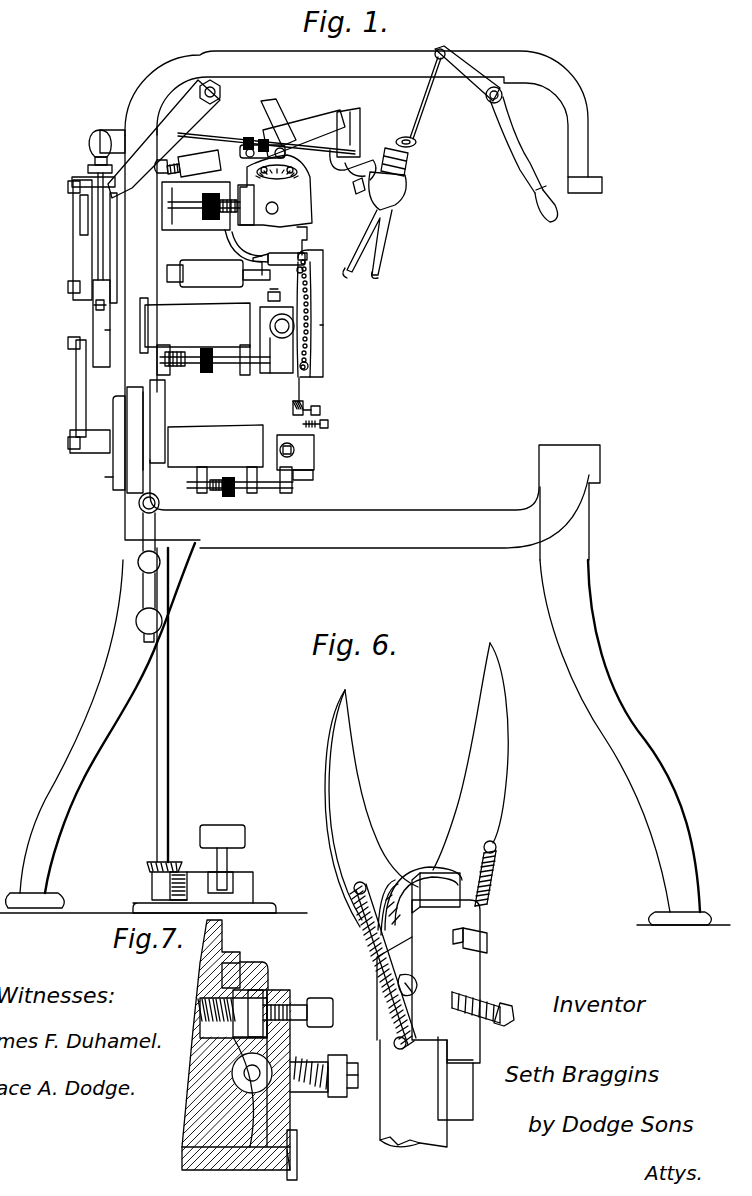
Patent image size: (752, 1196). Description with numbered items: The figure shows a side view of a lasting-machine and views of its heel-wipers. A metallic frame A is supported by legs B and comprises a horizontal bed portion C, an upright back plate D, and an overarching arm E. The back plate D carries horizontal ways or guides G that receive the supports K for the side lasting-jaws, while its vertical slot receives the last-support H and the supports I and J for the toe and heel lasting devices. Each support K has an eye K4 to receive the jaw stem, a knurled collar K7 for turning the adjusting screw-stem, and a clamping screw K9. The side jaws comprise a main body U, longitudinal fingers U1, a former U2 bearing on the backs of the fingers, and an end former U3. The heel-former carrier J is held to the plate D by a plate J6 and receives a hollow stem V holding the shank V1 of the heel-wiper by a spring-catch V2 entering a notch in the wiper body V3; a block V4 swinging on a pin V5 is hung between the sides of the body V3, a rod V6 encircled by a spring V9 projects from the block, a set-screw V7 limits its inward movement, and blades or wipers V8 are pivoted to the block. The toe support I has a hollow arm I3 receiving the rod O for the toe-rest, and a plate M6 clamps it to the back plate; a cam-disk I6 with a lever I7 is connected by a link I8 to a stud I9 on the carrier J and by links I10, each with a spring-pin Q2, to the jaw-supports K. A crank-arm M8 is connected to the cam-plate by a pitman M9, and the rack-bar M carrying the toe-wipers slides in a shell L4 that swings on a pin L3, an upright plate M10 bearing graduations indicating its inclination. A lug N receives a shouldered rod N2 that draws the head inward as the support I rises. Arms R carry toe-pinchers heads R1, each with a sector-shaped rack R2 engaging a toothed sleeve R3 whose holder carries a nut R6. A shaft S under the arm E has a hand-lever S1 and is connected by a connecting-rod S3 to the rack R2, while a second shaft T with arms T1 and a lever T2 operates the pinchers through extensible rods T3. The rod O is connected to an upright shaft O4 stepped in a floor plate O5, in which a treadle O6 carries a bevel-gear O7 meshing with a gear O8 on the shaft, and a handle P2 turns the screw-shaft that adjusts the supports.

In FIG. 1, the metallic frame A is at (95, 527).
In FIG. 1, the legs B is at (365, 734).
In FIG. 1, the horizontal bed portion C is at (375, 502).
In FIG. 1, the overarching arm E is at (363, 122).
In FIG. 1, the upright back plate D is at (128, 440).
In FIG. 1, the horizontal ways or guides G is at (146, 404).
In FIG. 1, the last-support H is at (208, 362).
In FIG. 1, the support or carrier for the toe-lasting mechanism I is at (196, 206).
In FIG. 1, the second hollow arm I3 is at (208, 283).
In FIG. 1, the plate or disk (cam-disk) I6 is at (105, 318).
In FIG. 1, the handle or lever I7 is at (95, 142).
In FIG. 1, the link I8 is at (192, 152).
In FIG. 1, the stud I9 is at (72, 450).
In FIG. 1, the links I10 is at (106, 330).
In FIG. 1, the heel-former carrier (support) J is at (230, 461).
In FIG. 1, the plate J6 is at (99, 475).
In FIG. 1, the supports for the side lasting-jaws K is at (195, 325).
In FIG. 1, the eye K4 is at (282, 338).
In FIG. 1, the knurled collar K7 is at (203, 372).
In FIG. 1, the screw K9 is at (268, 298).
In FIG. 1, the pin L3 is at (278, 210).
In FIG. 1, the tubular case or shell L4 is at (300, 215).
In FIG. 1, the rack-bar M is at (278, 116).
In FIG. 1, the plate M6 is at (127, 236).
In FIG. 1, the crank-arm M8 is at (107, 218).
In FIG. 1, the rod or pitman M9 is at (80, 258).
In FIG. 1, the upright plate M10 is at (277, 180).
In FIG. 1, the lug N is at (243, 252).
In FIG. 1, the shouldered rod N2 is at (186, 208).
In FIG. 1, the rod or stem O is at (250, 268).
In FIG. 1, the upright shaft O4 is at (150, 705).
In FIG. 1, the plate O5 is at (152, 892).
In FIG. 1, the foot-treadle O6 is at (222, 847).
In FIG. 1, the bevel-gear O7 is at (182, 875).
In FIG. 1, the bevel-gear O8 is at (148, 864).
In FIG. 1, the handle P2 is at (138, 564).
In FIG. 1, the spring-pin Q2 is at (94, 304).
In FIG. 1, the arms or brackets R is at (311, 129).
In FIG. 1, the toe-pinchers heads R1 is at (381, 225).
In FIG. 1, the sector-shaped rack R2 is at (348, 165).
In FIG. 1, the toothed hollow sleeve R3 is at (405, 162).
In FIG. 1, the nut R6 is at (416, 144).
In FIG. 1, the shaft S is at (222, 92).
In FIG. 1, the hand-lever S1 is at (164, 139).
In FIG. 1, the adjustable connecting-rod S3 is at (250, 137).
In FIG. 1, the second shaft T is at (488, 100).
In FIG. 1, the arms T1 is at (460, 72).
In FIG. 1, the handle or lever T2 is at (530, 135).
In FIG. 1, the extensible rods or connections T3 is at (419, 98).
In FIG. 1, the main body U is at (299, 313).
In FIG. 1, the longitudinal fingers U1 is at (310, 360).
In FIG. 1, the former U2 is at (323, 332).
In FIG. 1, the end former U3 is at (312, 302).
In FIG. 1, the hollow stem V is at (295, 452).
In FIG. 1, the shank of the heel-wiper V1 is at (311, 475).
In FIG. 6, the shank of the heel-wiper V1 is at (413, 1093).
In FIG. 6, the spring-catch V2 is at (476, 1062).
In FIG. 7, the spring-catch V2 is at (297, 1140).
In FIG. 6, the body of the heel-wiper V3 is at (463, 913).
In FIG. 7, the body of the heel-wiper V3 is at (280, 952).
In FIG. 6, the block V4 is at (420, 901).
In FIG. 7, the block V4 is at (229, 1092).
In FIG. 6, the pin V5 is at (411, 994).
In FIG. 7, the pin V5 is at (250, 1081).
In FIG. 1, the stem or rod V6 is at (330, 424).
In FIG. 6, the stem or rod V6 is at (470, 1035).
In FIG. 7, the stem or rod V6 is at (357, 1084).
In FIG. 1, the set-screw V7 is at (320, 408).
In FIG. 6, the set-screw V7 is at (487, 938).
In FIG. 7, the set-screw V7 is at (312, 998).
In FIG. 1, the blades or wipers V8 is at (303, 392).
In FIG. 6, the blades or wipers V8 is at (362, 810).
In FIG. 7, the blades or wipers V8 is at (232, 958).
In FIG. 6, the spring V9 is at (485, 996).
In FIG. 7, the spring V9 is at (310, 1058).